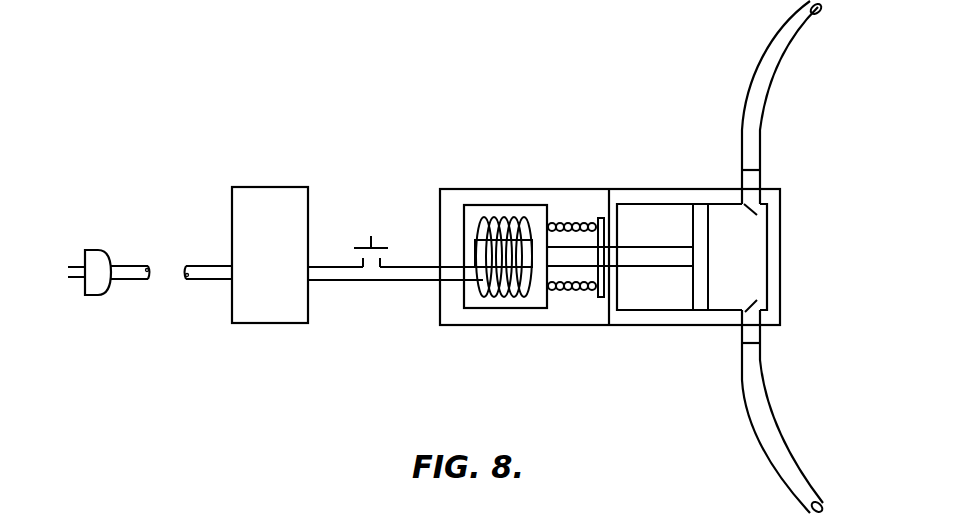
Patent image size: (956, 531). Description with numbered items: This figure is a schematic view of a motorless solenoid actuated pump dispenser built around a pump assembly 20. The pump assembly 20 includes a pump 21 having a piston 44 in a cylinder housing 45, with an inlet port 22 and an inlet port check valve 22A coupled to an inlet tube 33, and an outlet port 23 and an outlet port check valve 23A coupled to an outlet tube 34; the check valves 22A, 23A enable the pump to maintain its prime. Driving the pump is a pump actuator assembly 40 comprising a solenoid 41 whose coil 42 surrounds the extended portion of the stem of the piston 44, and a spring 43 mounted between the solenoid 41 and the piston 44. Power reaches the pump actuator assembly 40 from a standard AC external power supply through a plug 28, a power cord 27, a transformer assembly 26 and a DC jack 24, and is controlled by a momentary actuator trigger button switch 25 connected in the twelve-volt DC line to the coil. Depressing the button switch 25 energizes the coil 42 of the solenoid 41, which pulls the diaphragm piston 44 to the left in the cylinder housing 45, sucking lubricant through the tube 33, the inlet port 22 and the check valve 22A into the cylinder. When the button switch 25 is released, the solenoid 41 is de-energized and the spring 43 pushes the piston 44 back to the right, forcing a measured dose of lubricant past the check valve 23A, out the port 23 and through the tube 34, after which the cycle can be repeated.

The pump assembly 20 is at (536, 110).
The pump 21 is at (642, 176).
The inlet port 22 is at (762, 182).
The inlet port check valve 22A is at (751, 212).
The outlet port 23 is at (762, 336).
The outlet port check valve 23A is at (752, 313).
The DC jack 24 is at (405, 267).
The momentary actuator trigger button switch 25 is at (365, 247).
The transformer assembly 26 is at (260, 187).
The power cord 27 is at (133, 264).
The plug 28 is at (90, 250).
The inlet tube 33 is at (797, 50).
The outlet tube 34 is at (777, 420).
The pump actuator assembly 40 is at (518, 196).
The solenoid 41 is at (470, 312).
The coil 42 is at (494, 297).
The spring 43 is at (573, 288).
The piston 44 is at (642, 256).
The housing 45 is at (687, 314).